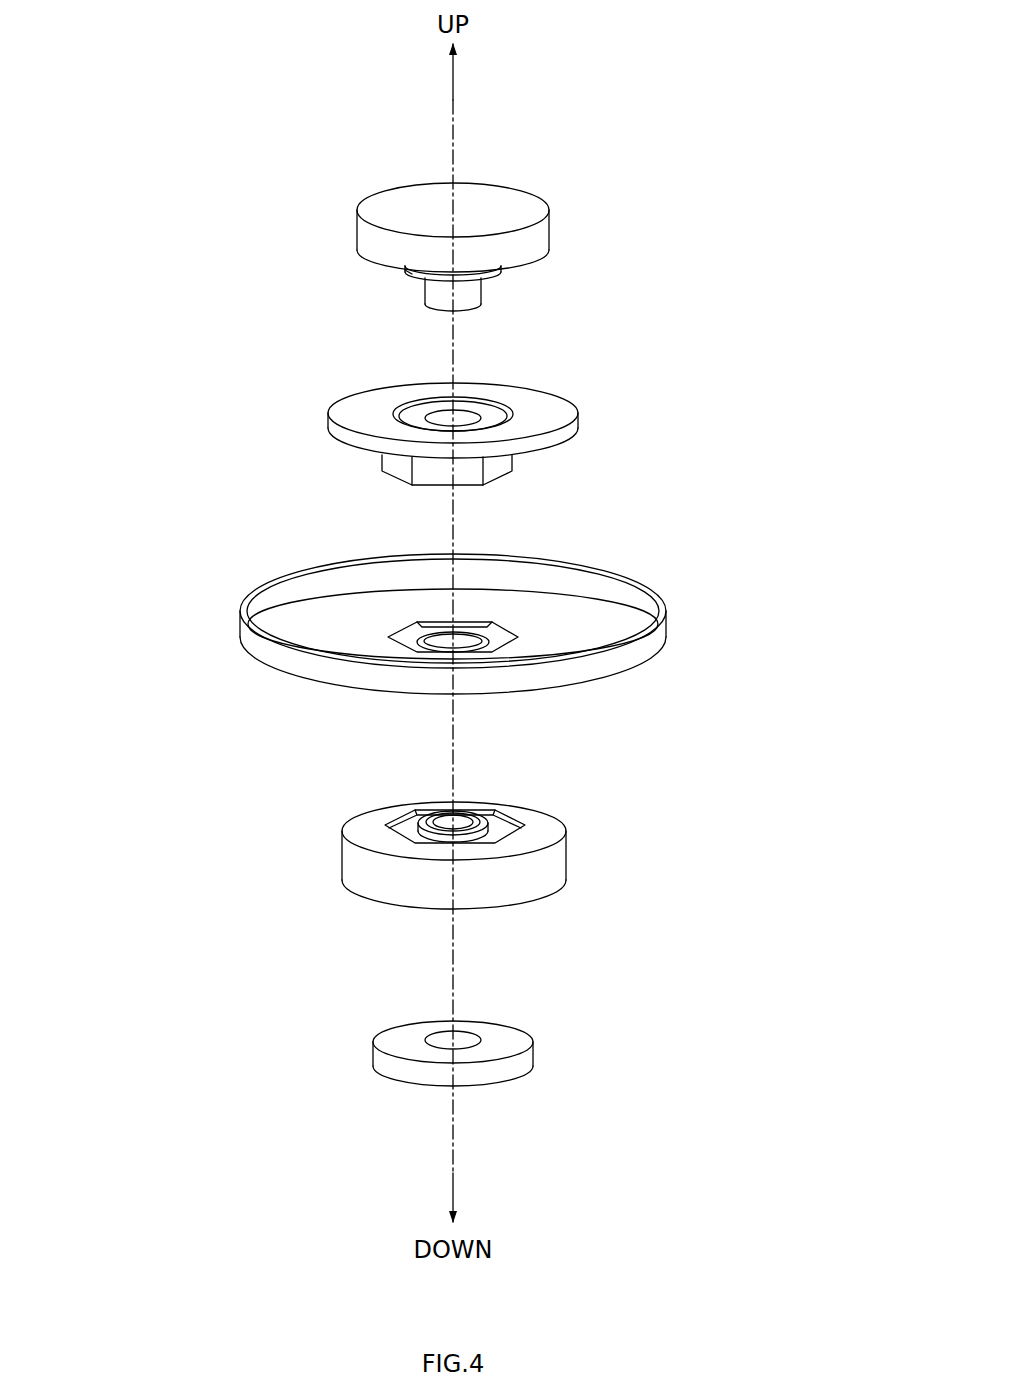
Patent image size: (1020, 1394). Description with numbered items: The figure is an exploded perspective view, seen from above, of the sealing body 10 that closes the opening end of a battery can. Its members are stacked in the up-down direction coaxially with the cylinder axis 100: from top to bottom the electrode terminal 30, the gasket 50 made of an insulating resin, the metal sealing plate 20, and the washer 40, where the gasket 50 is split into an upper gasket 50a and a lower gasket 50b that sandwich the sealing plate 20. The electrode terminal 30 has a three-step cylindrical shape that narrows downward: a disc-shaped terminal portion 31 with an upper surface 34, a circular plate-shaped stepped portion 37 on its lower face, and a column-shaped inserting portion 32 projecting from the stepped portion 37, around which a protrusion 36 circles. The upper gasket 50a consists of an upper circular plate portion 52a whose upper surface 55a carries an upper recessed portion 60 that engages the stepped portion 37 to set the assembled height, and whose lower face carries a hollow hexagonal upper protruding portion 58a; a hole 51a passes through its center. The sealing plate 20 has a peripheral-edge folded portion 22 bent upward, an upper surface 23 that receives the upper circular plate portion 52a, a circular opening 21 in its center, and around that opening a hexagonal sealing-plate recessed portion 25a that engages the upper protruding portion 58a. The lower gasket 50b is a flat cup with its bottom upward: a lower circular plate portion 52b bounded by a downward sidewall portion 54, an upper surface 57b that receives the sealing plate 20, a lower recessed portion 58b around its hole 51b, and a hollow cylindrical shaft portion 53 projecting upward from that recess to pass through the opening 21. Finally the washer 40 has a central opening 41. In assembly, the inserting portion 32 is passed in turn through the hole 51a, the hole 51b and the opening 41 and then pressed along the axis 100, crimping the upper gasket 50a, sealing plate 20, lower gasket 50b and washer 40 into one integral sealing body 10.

The sealing body 10 is at (299, 112).
The cylinder axis 100 is at (453, 125).
The sealing plate 20 is at (674, 551).
The opening 21 is at (461, 641).
The peripheral-edge folded portion 22 is at (666, 625).
The upper surface 23 is at (559, 624).
The sealing-plate recessed portion 25a is at (410, 633).
The electrode terminal 30 is at (517, 181).
The terminal portion 31 is at (540, 228).
The inserting portion 32 is at (468, 295).
The upper surface 34 is at (383, 210).
The protrusion 36 is at (407, 270).
The stepped portion 37 is at (501, 272).
The washer 40 is at (532, 1022).
The opening 41 is at (466, 1034).
The gasket 50 is at (135, 793).
The upper gasket 50a is at (309, 425).
The lower gasket 50b is at (296, 828).
The hole 51a is at (462, 417).
The hole 51b is at (464, 827).
The upper circular plate portion 52a is at (566, 435).
The lower circular plate portion 52b is at (360, 838).
The shaft portion 53 is at (516, 834).
The sidewall portion 54 is at (545, 878).
The upper surface 55a is at (387, 420).
The upper surface 57b is at (365, 824).
The upper protruding portion 58a is at (513, 466).
The lower recessed portion 58b is at (403, 818).
The upper recessed portion 60 is at (499, 415).